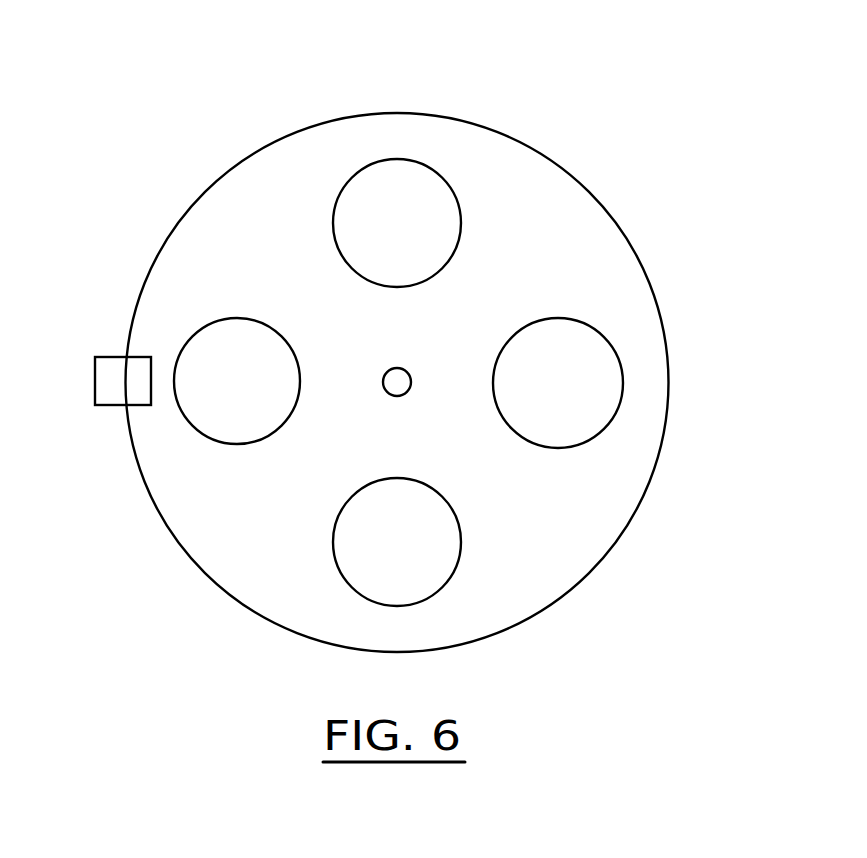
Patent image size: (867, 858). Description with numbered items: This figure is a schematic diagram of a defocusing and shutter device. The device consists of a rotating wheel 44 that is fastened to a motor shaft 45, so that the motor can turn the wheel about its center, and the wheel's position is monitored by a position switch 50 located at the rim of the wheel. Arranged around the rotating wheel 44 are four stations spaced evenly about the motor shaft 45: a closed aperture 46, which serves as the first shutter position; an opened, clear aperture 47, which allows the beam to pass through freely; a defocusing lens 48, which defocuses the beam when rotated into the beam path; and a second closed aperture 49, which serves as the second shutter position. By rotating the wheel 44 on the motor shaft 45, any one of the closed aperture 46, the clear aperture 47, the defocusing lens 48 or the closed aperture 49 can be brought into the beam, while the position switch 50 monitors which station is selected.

The rotating wheel 44 is at (259, 148).
The motor shaft 45 is at (382, 388).
The closed aperture 46 is at (218, 340).
The opened aperture 47 is at (402, 210).
The defocusing lens 48 is at (592, 383).
The closed aperture 49 is at (433, 568).
The position switch 50 is at (95, 372).